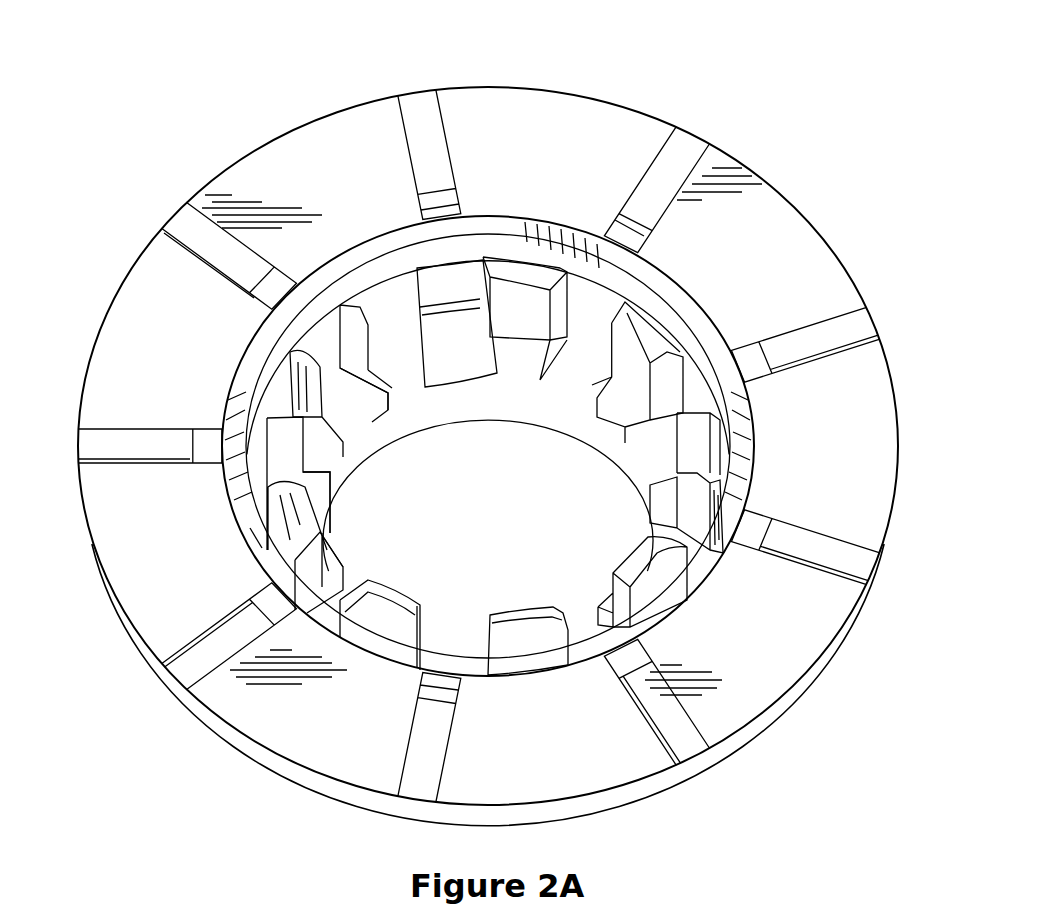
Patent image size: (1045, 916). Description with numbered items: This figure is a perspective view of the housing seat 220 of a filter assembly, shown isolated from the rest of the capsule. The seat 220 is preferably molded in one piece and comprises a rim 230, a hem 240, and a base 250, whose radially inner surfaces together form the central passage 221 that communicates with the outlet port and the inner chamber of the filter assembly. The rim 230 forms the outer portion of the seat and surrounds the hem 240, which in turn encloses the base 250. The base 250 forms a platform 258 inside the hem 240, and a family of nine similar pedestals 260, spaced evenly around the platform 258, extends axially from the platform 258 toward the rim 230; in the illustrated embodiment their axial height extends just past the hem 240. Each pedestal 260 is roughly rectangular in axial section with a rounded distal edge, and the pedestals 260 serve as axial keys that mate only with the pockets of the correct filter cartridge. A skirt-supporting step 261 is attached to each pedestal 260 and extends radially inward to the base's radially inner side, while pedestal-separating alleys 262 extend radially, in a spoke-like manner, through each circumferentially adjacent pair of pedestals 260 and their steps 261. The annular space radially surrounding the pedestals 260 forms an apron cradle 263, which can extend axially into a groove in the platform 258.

The housing seat 220 is at (650, 93).
The central passage 221 is at (504, 561).
The rim 230 is at (767, 268).
The hem 240 is at (457, 272).
The base 250 is at (455, 362).
The platform 258 is at (592, 385).
The pedestals 260 is at (525, 312).
The skirt-supporting steps 261 is at (395, 367).
The pedestal-separating alleys 262 is at (345, 540).
The apron cradle 263 is at (250, 528).